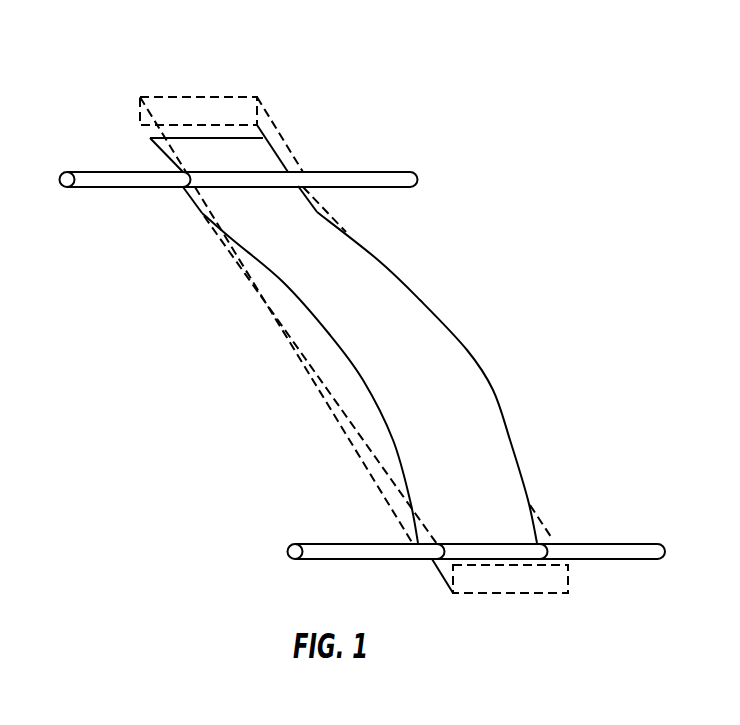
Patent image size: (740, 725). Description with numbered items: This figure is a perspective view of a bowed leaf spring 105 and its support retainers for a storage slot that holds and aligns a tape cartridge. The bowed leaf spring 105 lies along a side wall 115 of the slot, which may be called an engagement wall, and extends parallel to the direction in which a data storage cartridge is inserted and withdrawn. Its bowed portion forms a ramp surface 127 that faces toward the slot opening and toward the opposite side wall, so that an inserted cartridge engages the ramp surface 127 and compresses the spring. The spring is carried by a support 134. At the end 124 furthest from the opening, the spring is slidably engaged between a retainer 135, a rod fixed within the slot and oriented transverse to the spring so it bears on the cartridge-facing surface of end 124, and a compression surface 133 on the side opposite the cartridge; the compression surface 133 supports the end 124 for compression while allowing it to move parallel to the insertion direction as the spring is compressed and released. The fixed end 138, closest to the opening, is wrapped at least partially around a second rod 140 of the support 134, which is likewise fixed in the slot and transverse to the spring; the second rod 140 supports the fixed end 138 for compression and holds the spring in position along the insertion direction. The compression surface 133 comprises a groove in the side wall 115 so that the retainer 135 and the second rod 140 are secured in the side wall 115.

The bowed leaf spring 105 is at (467, 353).
The side wall 115 is at (340, 212).
The slidably engaged end 124 is at (253, 161).
The ramp surface 127 is at (465, 455).
The compression surface 133 is at (187, 117).
The support 134 is at (245, 280).
The retainer 135 is at (130, 172).
The fixed end 138 is at (548, 548).
The second rod 140 is at (358, 544).